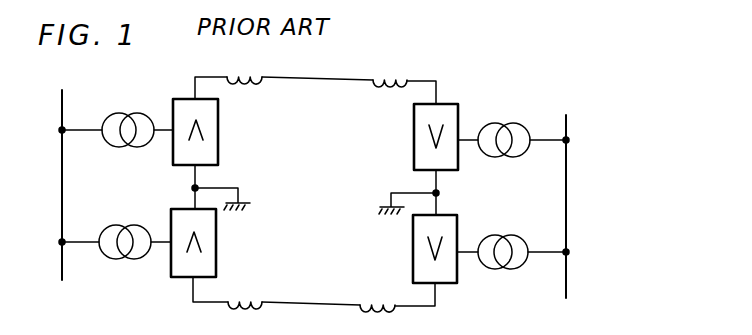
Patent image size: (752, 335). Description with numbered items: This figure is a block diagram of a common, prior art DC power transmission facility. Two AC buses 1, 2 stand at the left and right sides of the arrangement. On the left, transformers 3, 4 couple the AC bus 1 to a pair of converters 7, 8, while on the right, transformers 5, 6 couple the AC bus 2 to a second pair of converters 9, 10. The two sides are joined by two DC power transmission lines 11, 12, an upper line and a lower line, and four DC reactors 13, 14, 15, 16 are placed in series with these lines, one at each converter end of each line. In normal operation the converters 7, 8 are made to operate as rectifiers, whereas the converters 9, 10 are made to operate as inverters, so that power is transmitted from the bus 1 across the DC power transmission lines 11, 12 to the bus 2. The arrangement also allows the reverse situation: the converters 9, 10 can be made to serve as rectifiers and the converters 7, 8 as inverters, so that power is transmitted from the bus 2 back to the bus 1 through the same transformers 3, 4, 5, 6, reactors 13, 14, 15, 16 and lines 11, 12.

The AC bus 1 is at (62, 97).
The AC bus 2 is at (566, 178).
The transformer 3 is at (142, 117).
The transformer 4 is at (140, 229).
The transformer 5 is at (518, 122).
The transformer 6 is at (518, 234).
The converter 7 is at (218, 153).
The converter 8 is at (216, 225).
The converter 9 is at (414, 150).
The converter 10 is at (413, 259).
The DC power transmission line 11 is at (354, 79).
The DC power transmission line 12 is at (330, 303).
The DC reactor 13 is at (248, 71).
The DC reactor 14 is at (394, 75).
The DC reactor 15 is at (244, 297).
The DC reactor 16 is at (378, 301).